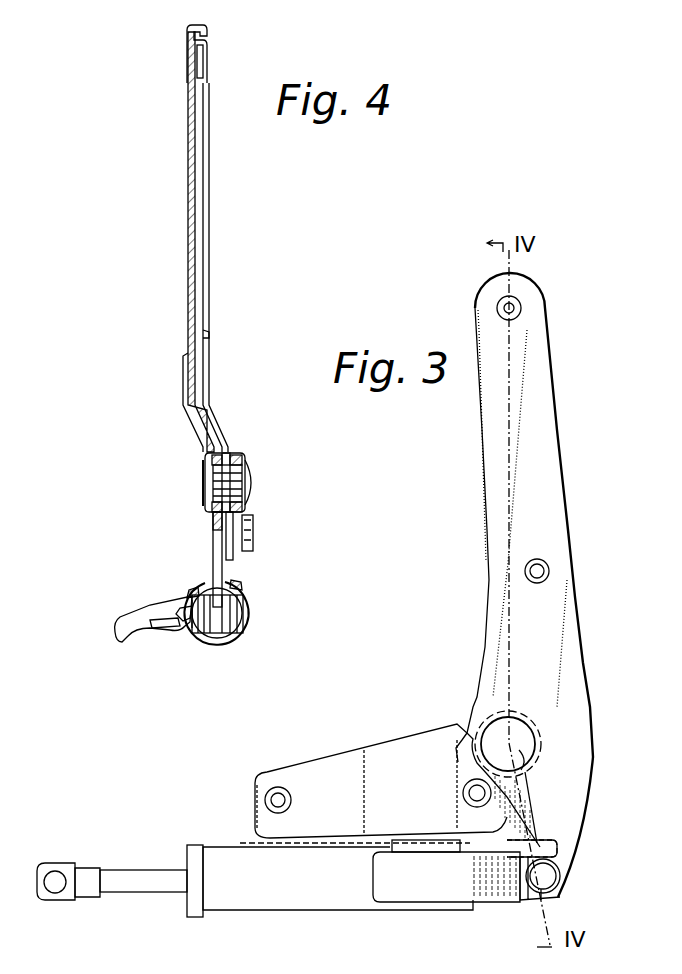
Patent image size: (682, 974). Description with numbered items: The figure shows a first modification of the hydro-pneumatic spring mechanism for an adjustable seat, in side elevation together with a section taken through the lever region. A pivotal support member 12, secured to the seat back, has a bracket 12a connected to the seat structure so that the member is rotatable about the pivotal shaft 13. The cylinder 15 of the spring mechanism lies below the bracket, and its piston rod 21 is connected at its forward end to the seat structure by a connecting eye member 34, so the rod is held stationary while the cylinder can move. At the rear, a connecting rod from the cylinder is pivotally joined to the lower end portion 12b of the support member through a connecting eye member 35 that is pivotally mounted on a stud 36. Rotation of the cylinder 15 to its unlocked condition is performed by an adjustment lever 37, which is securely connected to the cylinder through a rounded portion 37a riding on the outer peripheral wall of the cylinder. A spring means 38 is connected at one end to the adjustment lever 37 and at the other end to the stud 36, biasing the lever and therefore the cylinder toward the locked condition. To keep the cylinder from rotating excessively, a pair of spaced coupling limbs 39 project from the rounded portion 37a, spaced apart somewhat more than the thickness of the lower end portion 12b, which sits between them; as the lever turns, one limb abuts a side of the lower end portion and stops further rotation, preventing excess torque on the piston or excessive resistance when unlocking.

In FIG. 3, the pivotal support member 12 is at (575, 600).
In FIG. 4, the pivotal support member 12 is at (189, 136).
In FIG. 3, the bracket 12a is at (380, 752).
In FIG. 4, the bracket 12a is at (254, 522).
In FIG. 3, the lower end portion 12b is at (580, 778).
In FIG. 4, the lower end portion 12b is at (212, 519).
In FIG. 3, the pivotal shaft 13 is at (536, 745).
In FIG. 4, the pivotal shaft 13 is at (203, 470).
In FIG. 3, the cylinder 15 is at (286, 913).
In FIG. 4, the cylinder 15 is at (208, 640).
In FIG. 3, the piston rod 21 is at (157, 872).
In FIG. 3, the connecting eye member 34 is at (78, 868).
In FIG. 3, the connecting eye member 35 is at (538, 900).
In FIG. 4, the connecting eye member 35 is at (217, 622).
In FIG. 3, the stud 36 is at (560, 880).
In FIG. 4, the stud 36 is at (212, 584).
In FIG. 3, the adjustment lever 37 is at (440, 912).
In FIG. 4, the adjustment lever 37 is at (124, 618).
In FIG. 3, the rounded portion 37a is at (422, 848).
In FIG. 4, the rounded portion 37a is at (182, 598).
In FIG. 3, the spring means 38 is at (524, 901).
In FIG. 4, the spring means 38 is at (238, 634).
In FIG. 3, the coupling limb 39 is at (560, 848).
In FIG. 4, the coupling limb 39 is at (190, 590).